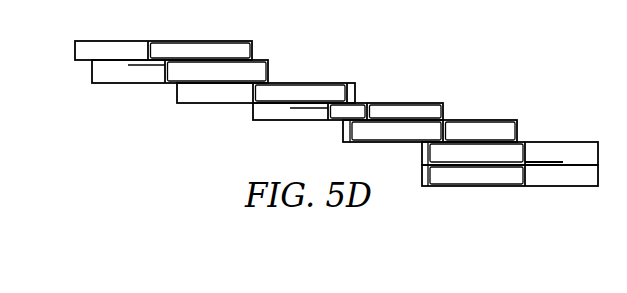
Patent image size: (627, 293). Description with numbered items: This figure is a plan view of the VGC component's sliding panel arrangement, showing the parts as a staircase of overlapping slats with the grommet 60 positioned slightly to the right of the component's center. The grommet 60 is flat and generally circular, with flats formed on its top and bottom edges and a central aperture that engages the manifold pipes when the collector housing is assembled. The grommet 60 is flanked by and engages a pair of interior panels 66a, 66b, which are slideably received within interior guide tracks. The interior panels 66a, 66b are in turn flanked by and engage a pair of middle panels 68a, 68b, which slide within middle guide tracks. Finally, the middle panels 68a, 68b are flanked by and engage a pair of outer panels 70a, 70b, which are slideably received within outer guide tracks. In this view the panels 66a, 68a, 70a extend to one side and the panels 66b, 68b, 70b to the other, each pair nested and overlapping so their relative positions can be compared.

The grommet 60 is at (384, 112).
The interior panel 66a is at (470, 130).
The interior panel 66b is at (285, 93).
The middle panel 68a is at (543, 152).
The middle panel 68b is at (130, 73).
The outer panel 70a is at (467, 175).
The outer panel 70b is at (115, 48).